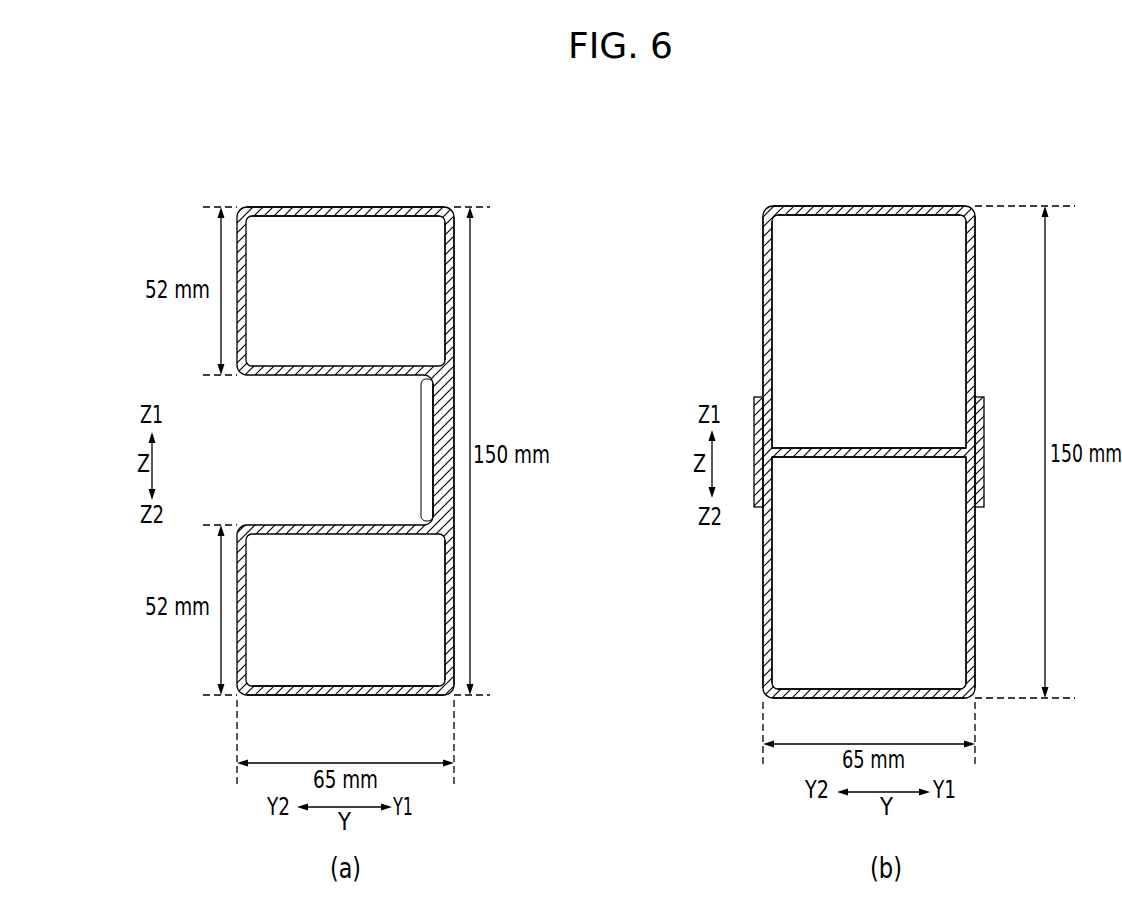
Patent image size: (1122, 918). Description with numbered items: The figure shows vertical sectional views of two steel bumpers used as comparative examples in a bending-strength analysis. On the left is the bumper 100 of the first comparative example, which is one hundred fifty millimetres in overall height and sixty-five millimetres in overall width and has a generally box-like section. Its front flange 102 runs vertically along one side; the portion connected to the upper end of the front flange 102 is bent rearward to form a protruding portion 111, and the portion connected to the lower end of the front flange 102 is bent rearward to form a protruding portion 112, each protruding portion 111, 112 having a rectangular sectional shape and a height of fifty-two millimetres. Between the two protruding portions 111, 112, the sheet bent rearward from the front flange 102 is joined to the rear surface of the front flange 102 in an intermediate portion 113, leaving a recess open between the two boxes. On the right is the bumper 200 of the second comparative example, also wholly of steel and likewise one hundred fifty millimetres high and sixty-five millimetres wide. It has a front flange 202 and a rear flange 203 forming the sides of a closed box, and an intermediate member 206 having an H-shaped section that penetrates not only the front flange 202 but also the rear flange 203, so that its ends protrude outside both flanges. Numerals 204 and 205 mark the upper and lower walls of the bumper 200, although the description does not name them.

The bumper 100 is at (392, 443).
The front flange 102 is at (450, 318).
The protruding portion 111 is at (326, 202).
The protruding portion 112 is at (327, 701).
The intermediate portion 113 is at (421, 378).
The bumper 200 is at (889, 409).
The front flange 202 is at (968, 345).
The rear flange 203 is at (772, 353).
The upper wall 204 is at (862, 215).
The lower wall 205 is at (870, 689).
The intermediate member 206 is at (855, 447).